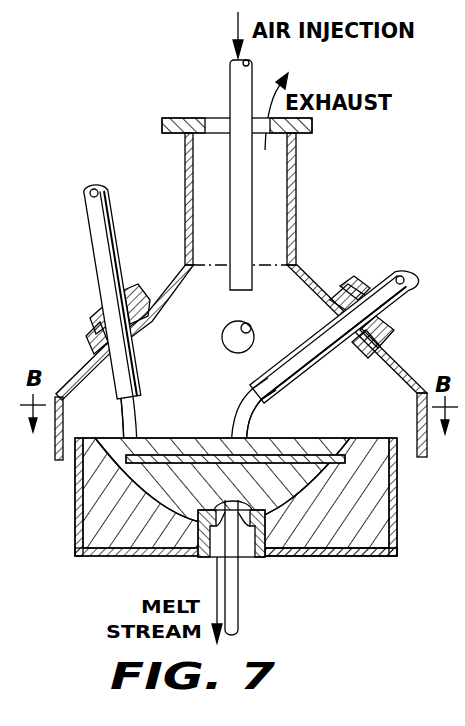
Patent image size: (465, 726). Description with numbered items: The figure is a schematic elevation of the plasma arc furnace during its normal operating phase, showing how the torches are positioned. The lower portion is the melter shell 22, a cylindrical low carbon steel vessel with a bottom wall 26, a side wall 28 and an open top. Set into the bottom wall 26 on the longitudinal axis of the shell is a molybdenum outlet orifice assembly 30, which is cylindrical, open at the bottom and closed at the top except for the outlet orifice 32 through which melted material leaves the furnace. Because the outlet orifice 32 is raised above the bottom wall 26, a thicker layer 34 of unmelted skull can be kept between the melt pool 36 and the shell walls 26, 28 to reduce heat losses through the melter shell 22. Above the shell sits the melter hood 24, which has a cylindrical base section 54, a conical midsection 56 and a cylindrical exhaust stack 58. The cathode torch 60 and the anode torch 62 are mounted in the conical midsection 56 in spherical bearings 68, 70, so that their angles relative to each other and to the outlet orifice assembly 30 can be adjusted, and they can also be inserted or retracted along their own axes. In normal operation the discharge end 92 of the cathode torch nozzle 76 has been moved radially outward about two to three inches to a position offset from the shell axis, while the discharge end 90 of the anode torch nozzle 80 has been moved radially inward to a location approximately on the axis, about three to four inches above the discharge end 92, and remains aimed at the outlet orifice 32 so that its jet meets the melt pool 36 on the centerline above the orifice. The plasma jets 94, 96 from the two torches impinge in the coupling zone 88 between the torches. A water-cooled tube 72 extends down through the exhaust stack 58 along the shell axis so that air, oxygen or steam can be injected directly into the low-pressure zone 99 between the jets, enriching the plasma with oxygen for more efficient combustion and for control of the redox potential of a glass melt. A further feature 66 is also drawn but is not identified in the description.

The melter shell 22 is at (235, 513).
The melter hood 24 is at (409, 380).
The bottom wall 26 is at (326, 558).
The side wall 28 is at (76, 500).
The outlet orifice assembly 30 is at (210, 550).
The outlet orifice 32 is at (248, 545).
The layer of unmelted skull 34 is at (94, 530).
The melt pool 36 is at (228, 458).
The cylindrical base section 54 is at (54, 435).
The conical midsection 56 is at (70, 372).
The cylindrical exhaust stack 58 is at (185, 188).
The cathode torch 60 is at (112, 238).
The anode torch 62 is at (398, 282).
The sight port 66 is at (252, 334).
The spherical bearing 68 is at (86, 338).
The spherical bearing 70 is at (392, 344).
The water-cooled tube 72 is at (230, 68).
The cathode torch nozzle 76 is at (136, 376).
The anode torch nozzle 80 is at (318, 368).
The coupling zone 88 is at (197, 458).
The discharge end of anode torch nozzle 90 is at (282, 404).
The discharge end of cathode torch nozzle 92 is at (138, 400).
The cathode plasma jet 94 is at (122, 436).
The anode plasma jet 96 is at (250, 446).
The low-pressure zone 99 is at (206, 318).